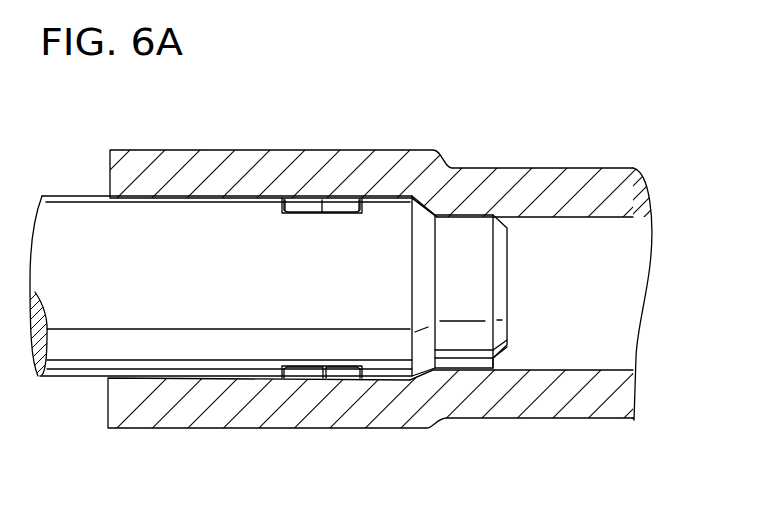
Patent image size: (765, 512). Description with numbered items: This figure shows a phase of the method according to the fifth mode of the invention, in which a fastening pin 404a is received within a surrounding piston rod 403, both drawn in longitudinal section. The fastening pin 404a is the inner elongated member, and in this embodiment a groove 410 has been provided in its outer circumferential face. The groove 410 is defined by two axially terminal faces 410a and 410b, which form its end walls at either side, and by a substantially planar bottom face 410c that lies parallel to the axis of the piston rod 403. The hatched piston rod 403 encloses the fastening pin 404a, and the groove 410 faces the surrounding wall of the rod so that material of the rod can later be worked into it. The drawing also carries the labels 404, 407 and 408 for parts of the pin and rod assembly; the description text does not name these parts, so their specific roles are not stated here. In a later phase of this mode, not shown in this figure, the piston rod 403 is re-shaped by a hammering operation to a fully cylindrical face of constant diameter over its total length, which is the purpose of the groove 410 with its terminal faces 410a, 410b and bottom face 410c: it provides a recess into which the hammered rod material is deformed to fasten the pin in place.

The piston rod 403 is at (582, 182).
The hollow shaft 404 is at (60, 207).
The fastening pin 404a is at (236, 210).
The reduced-diameter shaft end section 407 is at (483, 277).
The shoulder 408 is at (424, 197).
The groove 410 is at (325, 380).
The axially terminal face 410a is at (287, 201).
The axially terminal face 410b is at (358, 201).
The bottom face 410c is at (331, 207).